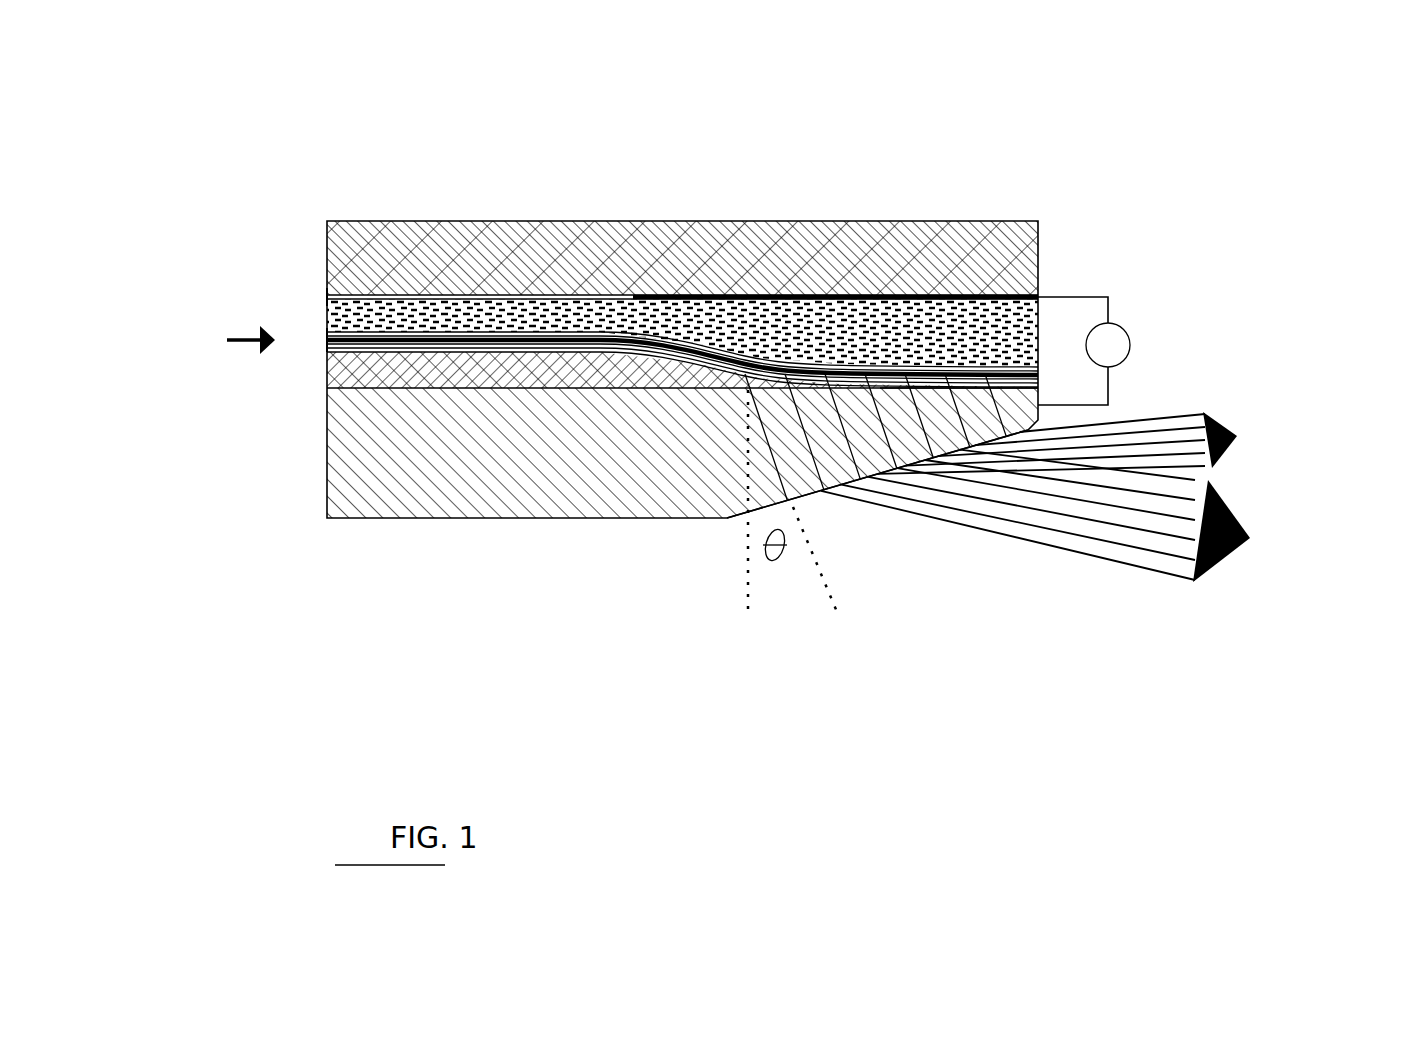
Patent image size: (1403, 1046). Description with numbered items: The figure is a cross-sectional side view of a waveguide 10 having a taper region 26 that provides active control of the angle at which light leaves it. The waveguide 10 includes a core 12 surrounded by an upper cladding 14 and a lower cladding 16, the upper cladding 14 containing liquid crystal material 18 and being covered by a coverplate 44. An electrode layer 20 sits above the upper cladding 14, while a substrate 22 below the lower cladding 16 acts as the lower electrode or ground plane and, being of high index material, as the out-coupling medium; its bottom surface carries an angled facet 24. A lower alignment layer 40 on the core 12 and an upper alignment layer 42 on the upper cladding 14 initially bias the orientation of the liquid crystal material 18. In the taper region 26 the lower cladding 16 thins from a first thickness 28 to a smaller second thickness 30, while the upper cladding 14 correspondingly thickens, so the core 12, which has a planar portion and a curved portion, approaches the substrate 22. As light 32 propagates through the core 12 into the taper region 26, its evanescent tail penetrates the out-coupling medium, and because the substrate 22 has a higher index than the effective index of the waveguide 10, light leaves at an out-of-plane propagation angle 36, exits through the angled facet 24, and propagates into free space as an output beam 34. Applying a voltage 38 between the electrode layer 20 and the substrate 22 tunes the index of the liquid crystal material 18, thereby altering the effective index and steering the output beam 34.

The waveguide 10 is at (203, 770).
The core 12 is at (327, 347).
The upper cladding 14 is at (384, 305).
The lower cladding 16 is at (537, 372).
The liquid crystal material 18 is at (410, 320).
The electrode layer 20 is at (907, 300).
The substrate 22 is at (403, 453).
The angled facet 24 is at (732, 517).
The taper region 26 is at (873, 337).
The first thickness 28 is at (580, 360).
The second thickness 30 is at (997, 387).
The light 32 is at (248, 337).
The output beam 34 is at (1233, 452).
The propagation angle 36 is at (781, 560).
The voltage 38 is at (1128, 330).
The lower alignment layer 40 is at (327, 335).
The upper alignment layer 42 is at (327, 297).
The coverplate 44 is at (504, 263).